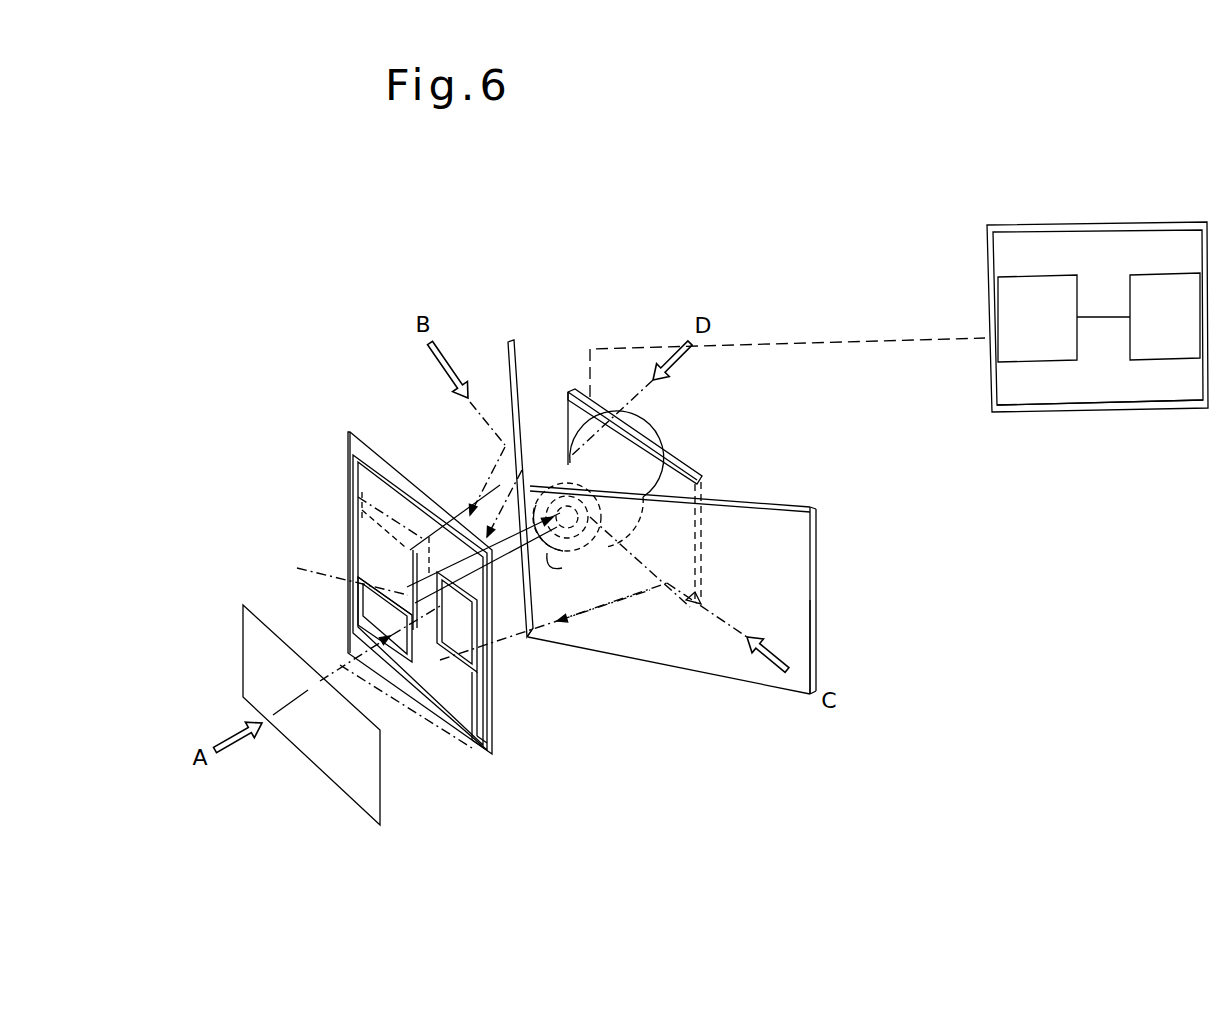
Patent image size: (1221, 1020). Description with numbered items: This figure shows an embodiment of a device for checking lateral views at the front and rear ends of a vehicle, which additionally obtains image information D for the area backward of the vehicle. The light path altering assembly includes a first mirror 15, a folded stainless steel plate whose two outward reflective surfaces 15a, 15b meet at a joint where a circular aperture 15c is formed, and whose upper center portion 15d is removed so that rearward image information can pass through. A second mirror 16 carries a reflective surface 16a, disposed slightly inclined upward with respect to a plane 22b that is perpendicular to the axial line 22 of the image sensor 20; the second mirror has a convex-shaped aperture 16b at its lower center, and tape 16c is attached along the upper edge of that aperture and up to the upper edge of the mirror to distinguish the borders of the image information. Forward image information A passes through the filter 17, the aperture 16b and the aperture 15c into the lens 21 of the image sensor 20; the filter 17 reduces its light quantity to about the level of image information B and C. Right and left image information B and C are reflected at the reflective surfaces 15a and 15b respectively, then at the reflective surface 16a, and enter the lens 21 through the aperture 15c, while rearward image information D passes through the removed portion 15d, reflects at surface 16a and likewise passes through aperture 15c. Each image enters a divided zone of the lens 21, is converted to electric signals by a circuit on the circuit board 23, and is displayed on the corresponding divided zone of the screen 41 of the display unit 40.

The first mirror 15 is at (646, 510).
The reflective surface 15a is at (515, 463).
The reflective surface 15b is at (713, 643).
The circular aperture 15c is at (570, 547).
The upper center portion 15d is at (538, 485).
The second mirror 16 is at (350, 533).
The reflective surface 16a is at (408, 487).
The convex-shaped aperture 16b is at (470, 712).
The tape 16c is at (350, 483).
The filter 17 is at (343, 772).
The image sensor 20 is at (609, 473).
The lens 21 is at (605, 612).
The axial line 22 is at (468, 662).
The plane 22b is at (328, 585).
The circuit board 23 is at (699, 466).
The display unit 40 is at (1095, 216).
The screen 41 is at (1172, 383).